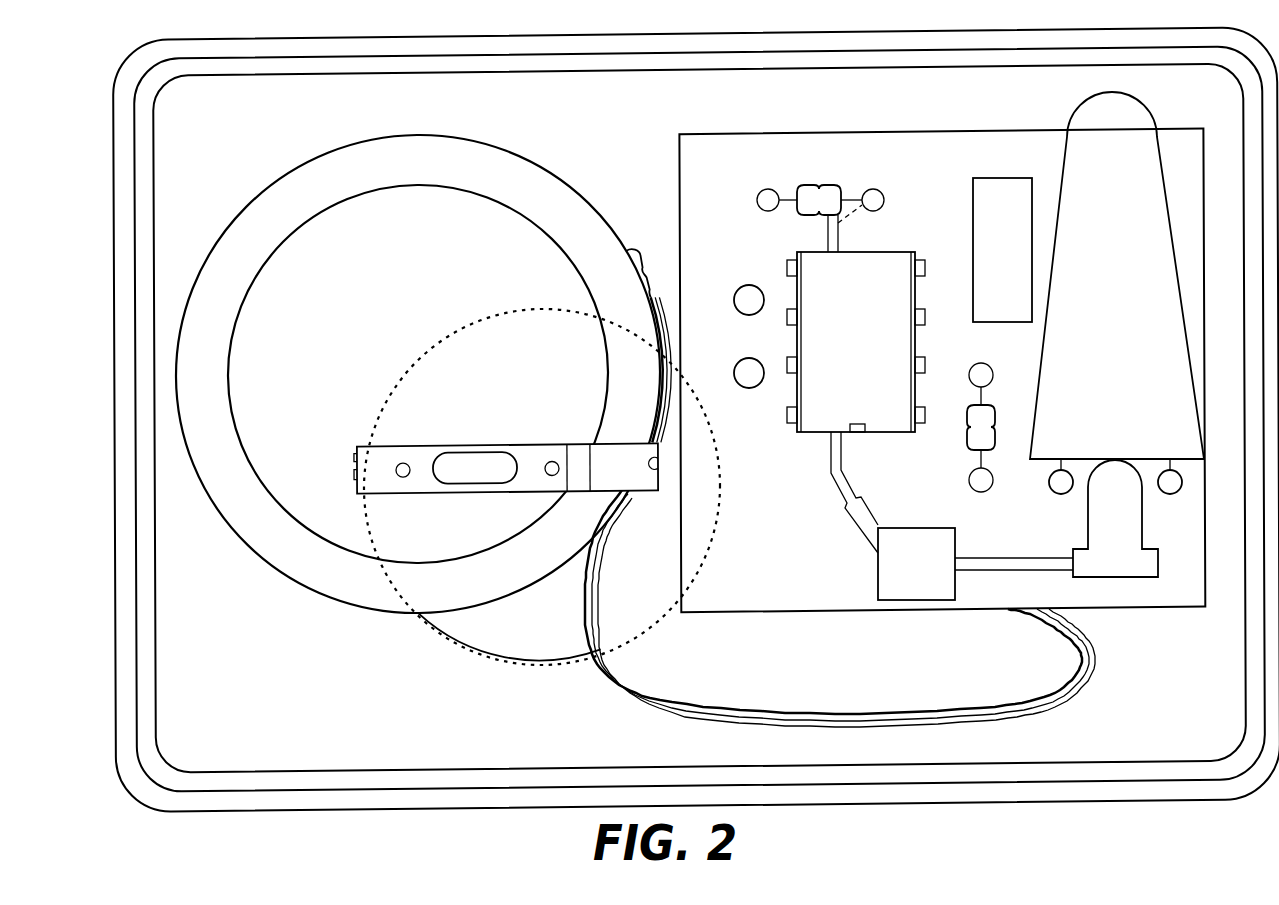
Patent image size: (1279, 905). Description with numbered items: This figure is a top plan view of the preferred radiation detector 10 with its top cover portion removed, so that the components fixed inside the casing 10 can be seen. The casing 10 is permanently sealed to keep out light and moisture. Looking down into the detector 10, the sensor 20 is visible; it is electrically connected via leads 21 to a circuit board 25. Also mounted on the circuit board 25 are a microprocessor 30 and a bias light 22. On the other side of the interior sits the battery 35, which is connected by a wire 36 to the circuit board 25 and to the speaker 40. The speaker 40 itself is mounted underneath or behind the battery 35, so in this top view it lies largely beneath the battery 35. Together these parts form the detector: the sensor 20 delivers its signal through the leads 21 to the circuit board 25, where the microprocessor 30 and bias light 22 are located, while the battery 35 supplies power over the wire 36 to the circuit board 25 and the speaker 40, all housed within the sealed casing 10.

The detector 10 is at (81, 113).
The sensor 20 is at (1127, 305).
The leads 21 is at (1158, 474).
The bias light 22 is at (1128, 528).
The circuit board 25 is at (946, 219).
The microprocessor 30 is at (869, 349).
The battery 35 is at (417, 325).
The wire 36 is at (668, 700).
The speaker 40 is at (485, 656).